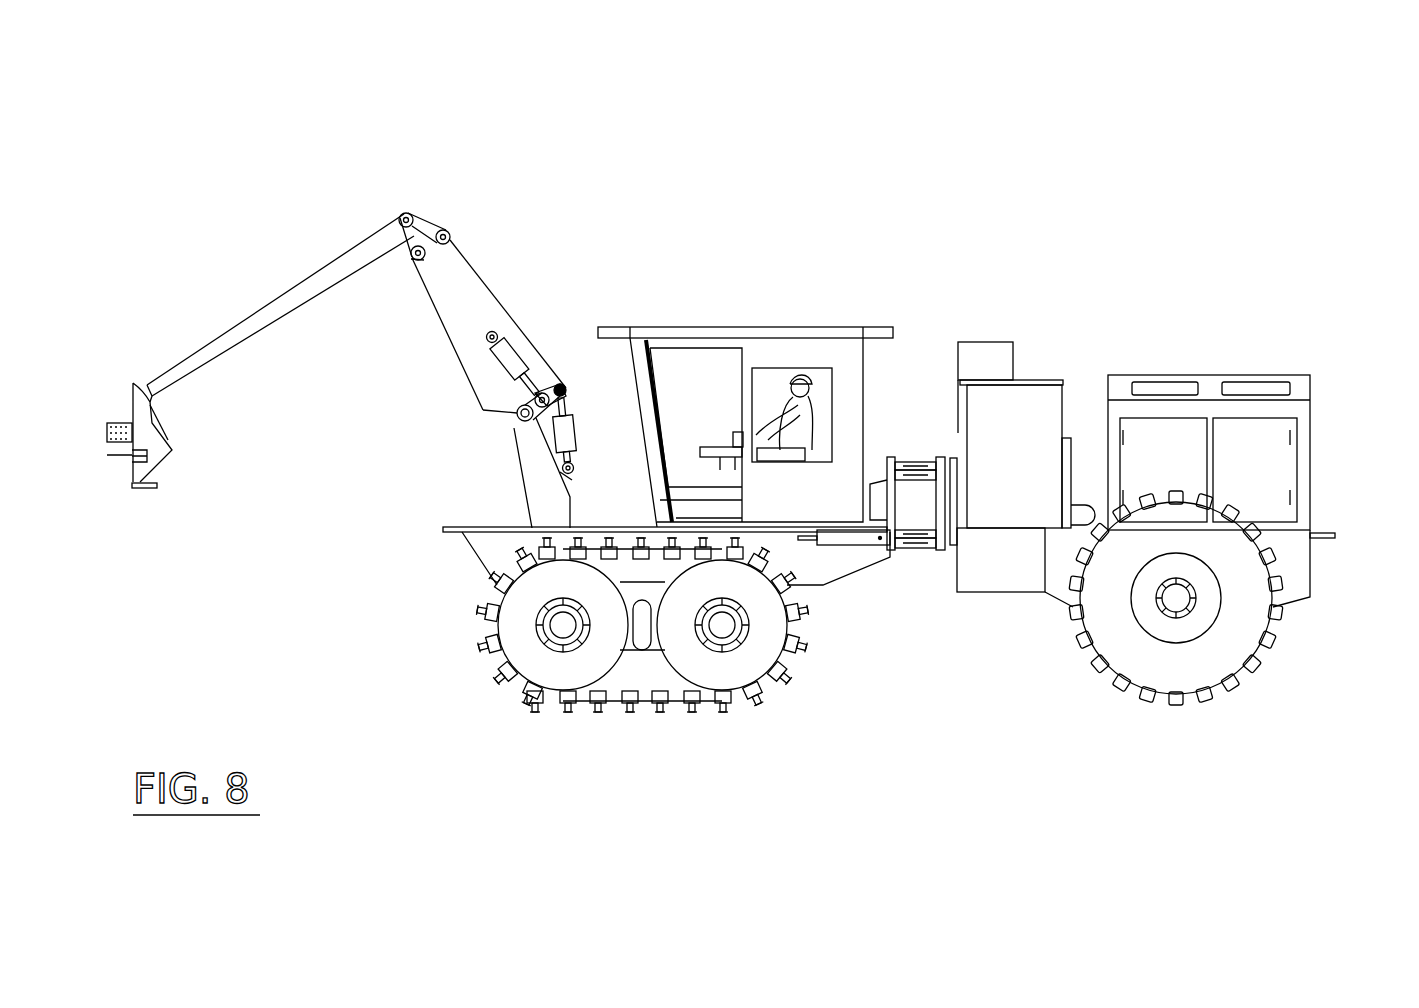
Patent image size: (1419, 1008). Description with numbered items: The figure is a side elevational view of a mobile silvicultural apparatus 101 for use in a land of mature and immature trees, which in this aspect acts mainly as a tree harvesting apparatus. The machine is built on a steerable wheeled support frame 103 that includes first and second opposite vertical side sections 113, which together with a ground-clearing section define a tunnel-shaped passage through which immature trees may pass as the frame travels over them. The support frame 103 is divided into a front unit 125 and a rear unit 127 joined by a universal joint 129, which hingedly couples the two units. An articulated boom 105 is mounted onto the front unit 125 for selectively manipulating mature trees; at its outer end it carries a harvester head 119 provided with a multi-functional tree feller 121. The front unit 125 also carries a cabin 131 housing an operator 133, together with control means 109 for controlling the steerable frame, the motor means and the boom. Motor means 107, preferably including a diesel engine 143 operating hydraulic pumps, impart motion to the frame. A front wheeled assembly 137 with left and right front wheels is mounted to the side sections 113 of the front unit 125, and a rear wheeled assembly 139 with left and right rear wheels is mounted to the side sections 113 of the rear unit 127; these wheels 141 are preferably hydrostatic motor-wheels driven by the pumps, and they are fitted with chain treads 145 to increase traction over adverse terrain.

The mobile silvicultural apparatus 101 is at (947, 218).
The steerable wheeled support frame 103 is at (846, 589).
The articulated boom 105 is at (320, 246).
The motor means 107 is at (1342, 336).
The control means 109 is at (708, 430).
The vertical side sections 113 is at (835, 573).
The harvester head 119 is at (133, 362).
The multi-functional tree feller 121 is at (145, 438).
The front unit 125 is at (609, 300).
The rear unit 127 is at (1203, 318).
The universal joint 129 is at (912, 444).
The cabin 131 is at (813, 343).
The operator 133 is at (806, 420).
The front wheeled assembly 137 is at (537, 661).
The rear wheeled assembly 139 is at (1281, 666).
The hydrostatic motor-wheels 141 is at (1133, 650).
The diesel engine 143 is at (1277, 466).
The chain treads 145 is at (485, 597).